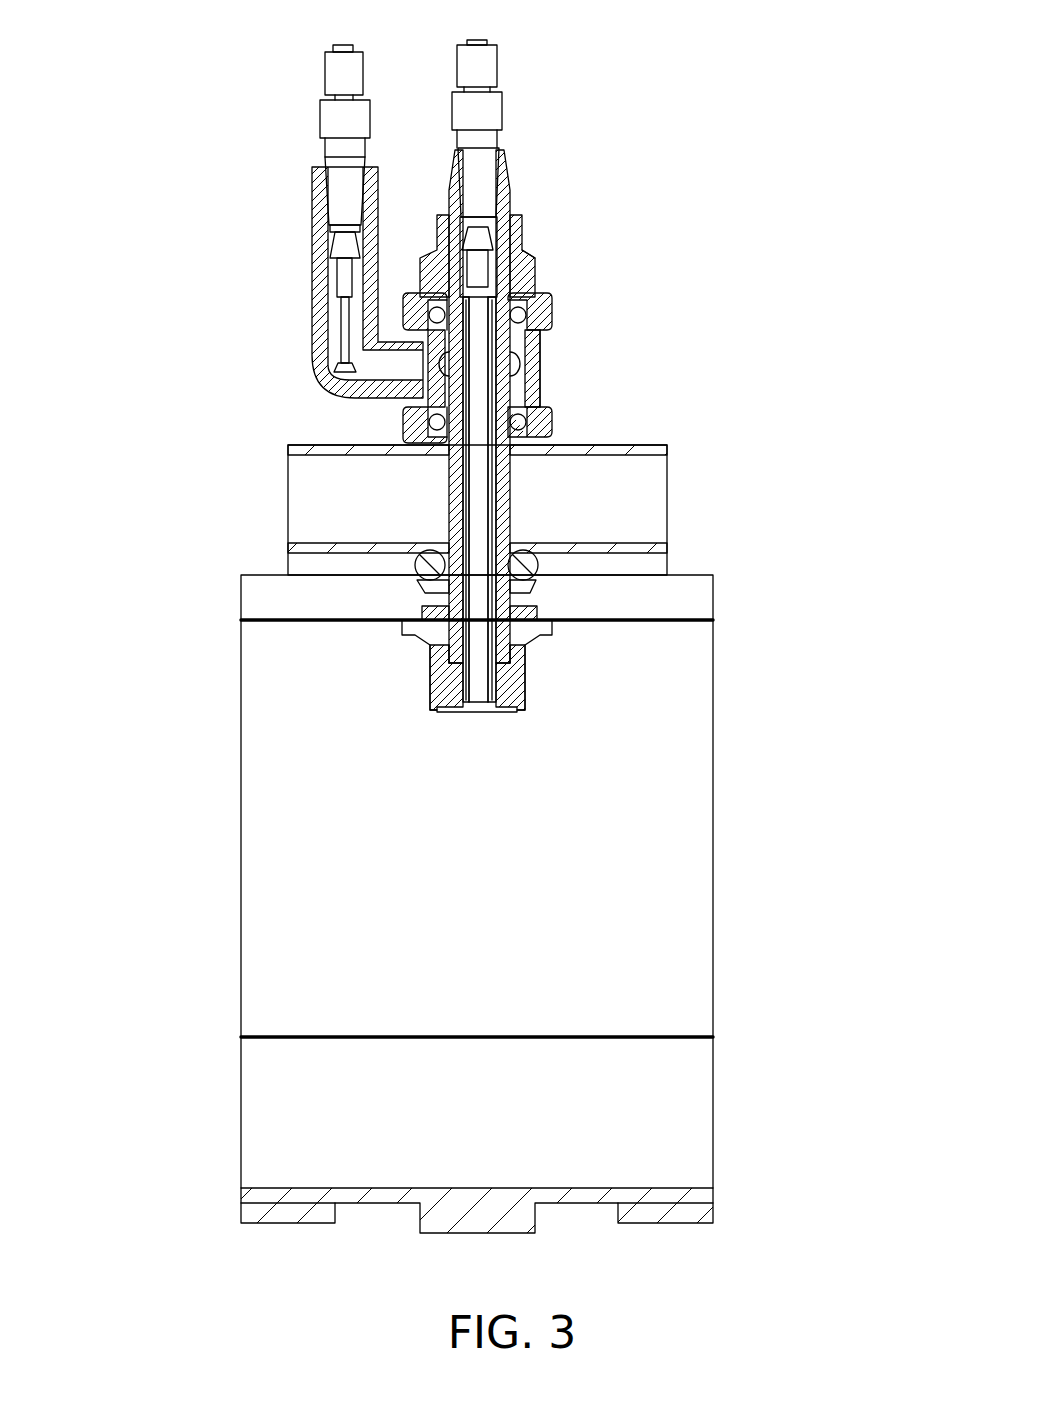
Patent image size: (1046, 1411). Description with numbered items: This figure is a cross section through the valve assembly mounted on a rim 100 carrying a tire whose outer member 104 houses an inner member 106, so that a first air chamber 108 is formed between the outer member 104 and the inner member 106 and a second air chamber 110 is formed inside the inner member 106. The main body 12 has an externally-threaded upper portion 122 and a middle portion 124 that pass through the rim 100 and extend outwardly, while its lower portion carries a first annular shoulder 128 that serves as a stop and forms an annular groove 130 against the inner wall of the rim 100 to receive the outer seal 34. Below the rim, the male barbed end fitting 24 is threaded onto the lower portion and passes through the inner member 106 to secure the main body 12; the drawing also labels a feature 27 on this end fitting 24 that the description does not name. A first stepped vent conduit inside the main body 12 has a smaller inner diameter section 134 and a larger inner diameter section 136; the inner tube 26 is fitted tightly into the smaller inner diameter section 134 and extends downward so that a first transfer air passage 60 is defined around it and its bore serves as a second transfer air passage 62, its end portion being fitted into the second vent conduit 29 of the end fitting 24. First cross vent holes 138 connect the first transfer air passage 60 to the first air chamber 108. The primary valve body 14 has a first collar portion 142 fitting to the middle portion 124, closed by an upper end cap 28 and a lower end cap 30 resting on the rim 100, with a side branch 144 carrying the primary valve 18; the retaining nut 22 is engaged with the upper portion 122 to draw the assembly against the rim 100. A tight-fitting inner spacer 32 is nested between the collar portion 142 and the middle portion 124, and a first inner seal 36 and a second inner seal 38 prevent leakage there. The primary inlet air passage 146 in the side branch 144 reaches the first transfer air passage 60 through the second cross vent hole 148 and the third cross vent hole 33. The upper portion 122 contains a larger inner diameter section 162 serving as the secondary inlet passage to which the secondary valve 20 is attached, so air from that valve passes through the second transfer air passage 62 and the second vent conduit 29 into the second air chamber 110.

The main body 12 is at (444, 500).
The primary valve body 14 is at (310, 195).
The primary valve 18 is at (318, 100).
The secondary valve 20 is at (508, 95).
The retaining nut 22 is at (516, 214).
The male barbed end fitting 24 is at (516, 683).
The inner tube 26 is at (494, 415).
The thread 27 is at (519, 708).
The upper end cap 28 is at (407, 295).
The second vent conduit 29 is at (480, 705).
The lower end cap 30 is at (402, 425).
The tight-fitting inner spacer 32 is at (529, 347).
The third cross vent hole 33 is at (448, 355).
The outer seal 34 is at (540, 563).
The first inner seal 36 is at (528, 313).
The second inner seal 38 is at (528, 420).
The first transfer air passage 60 is at (462, 462).
The second transfer air passage 62 is at (512, 473).
The rim 100 is at (658, 440).
The outer member 104 is at (236, 1195).
The inner member 106 is at (278, 624).
The first air chamber 108 is at (658, 1134).
The second air chamber 110 is at (645, 964).
The externally-threaded upper portion 122 is at (492, 258).
The middle portion 124 is at (446, 521).
The first annular shoulder 128 is at (534, 585).
The annular groove 130 is at (497, 500).
The smaller inner diameter section 134 is at (523, 272).
The larger inner diameter section 136 is at (540, 384).
The first cross vent holes 138 is at (437, 595).
The first collar portion 142 is at (536, 333).
The side branch 144 is at (316, 228).
The primary inlet air passage 146 is at (343, 308).
The second cross vent hole 148 is at (440, 377).
The larger inner diameter section 162 is at (518, 232).